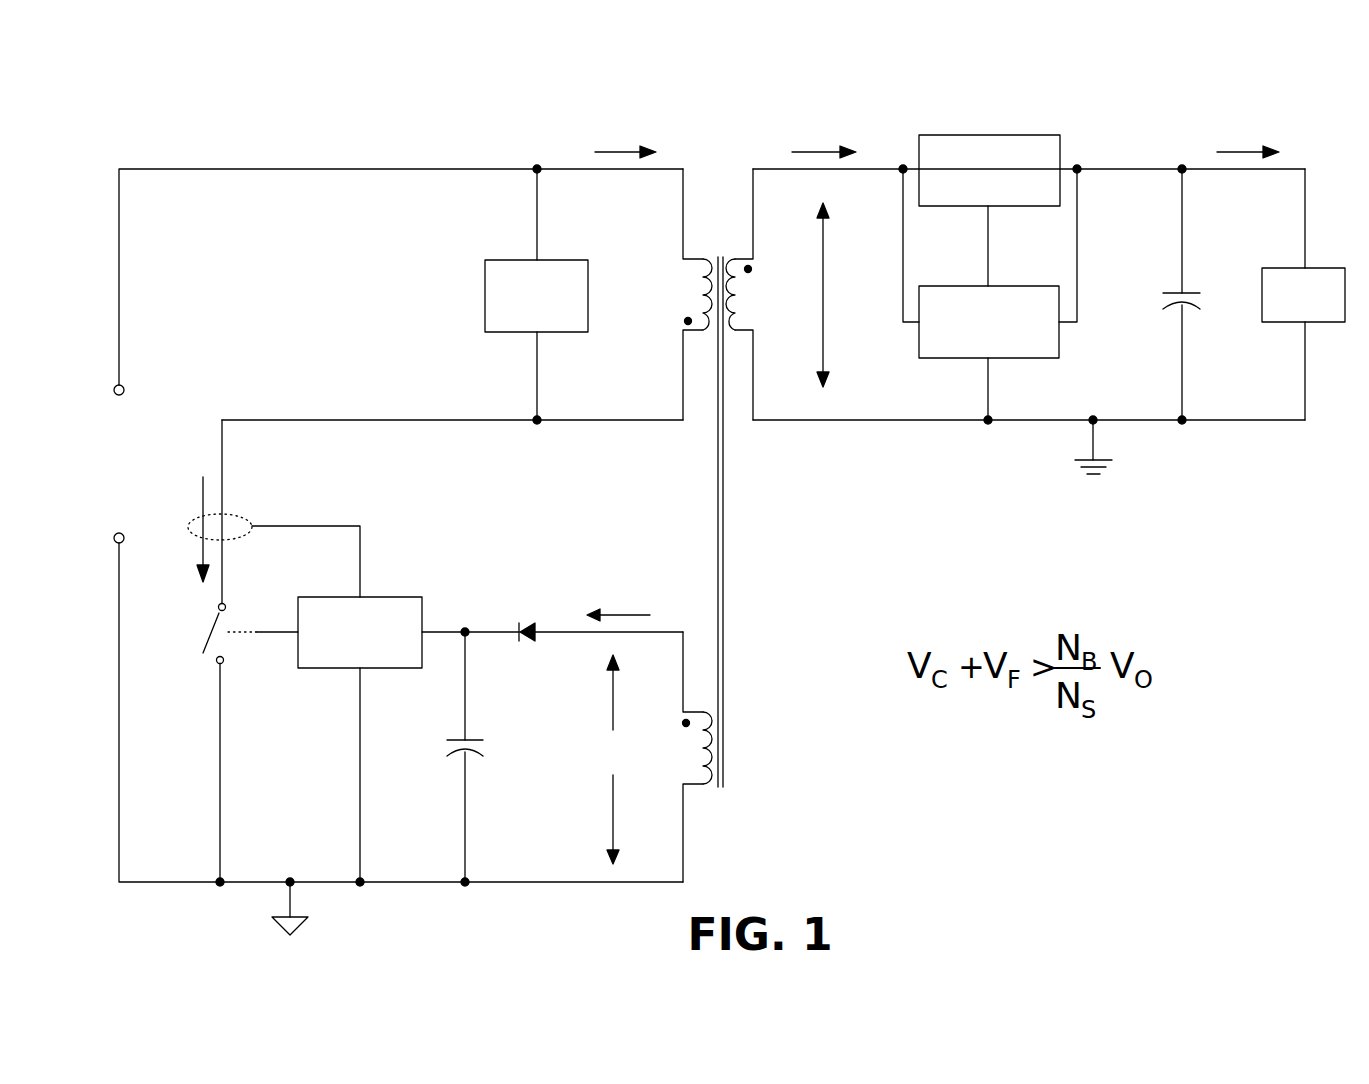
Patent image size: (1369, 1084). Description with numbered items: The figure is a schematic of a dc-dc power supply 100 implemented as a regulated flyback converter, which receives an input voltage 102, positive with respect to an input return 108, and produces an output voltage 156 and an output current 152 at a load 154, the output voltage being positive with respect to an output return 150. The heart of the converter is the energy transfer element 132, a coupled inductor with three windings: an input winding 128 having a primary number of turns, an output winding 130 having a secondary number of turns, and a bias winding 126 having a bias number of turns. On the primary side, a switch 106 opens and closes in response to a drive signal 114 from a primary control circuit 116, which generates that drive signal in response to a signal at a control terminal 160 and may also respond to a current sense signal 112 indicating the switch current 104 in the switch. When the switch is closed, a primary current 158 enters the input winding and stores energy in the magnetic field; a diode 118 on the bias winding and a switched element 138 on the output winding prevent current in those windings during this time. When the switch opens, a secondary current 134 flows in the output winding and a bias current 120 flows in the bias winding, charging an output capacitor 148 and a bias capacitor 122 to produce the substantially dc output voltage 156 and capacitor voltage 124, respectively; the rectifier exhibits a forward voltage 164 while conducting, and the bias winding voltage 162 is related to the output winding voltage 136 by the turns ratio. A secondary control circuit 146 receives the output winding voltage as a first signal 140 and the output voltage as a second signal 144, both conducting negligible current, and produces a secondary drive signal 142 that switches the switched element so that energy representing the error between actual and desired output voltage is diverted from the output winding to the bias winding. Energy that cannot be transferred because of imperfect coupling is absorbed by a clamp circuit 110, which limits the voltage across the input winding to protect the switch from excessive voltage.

The dc-dc power supply 100 is at (727, 64).
The input voltage VIN 102 is at (103, 462).
The current ID 104 is at (196, 480).
The switch S1 106 is at (197, 625).
The input return 108 is at (313, 908).
The clamp circuit 110 is at (480, 302).
The current sense signal 112 is at (327, 532).
The drive signal 114 is at (292, 640).
The primary control circuit 116 is at (392, 592).
The diode 118 is at (526, 620).
The current IB 120 is at (632, 612).
The capacitor C2 122 is at (456, 760).
The voltage VC 124 is at (505, 740).
The bias winding 126 is at (688, 770).
The input winding 128 is at (688, 275).
The output winding 130 is at (752, 318).
The energy transfer element L1 132 is at (728, 497).
The current IS 134 is at (805, 141).
The voltage VS 136 is at (832, 300).
The switched element 138 is at (995, 127).
The signal 140 is at (910, 268).
The drive signal 142 is at (997, 268).
The signal 144 is at (1085, 268).
The secondary control circuit 146 is at (960, 364).
The capacitor C1 148 is at (1165, 318).
The output return 150 is at (1105, 438).
The output current IO 152 is at (1228, 141).
The load 154 is at (1318, 258).
The output voltage VO 156 is at (1230, 313).
The primary current IP 158 is at (608, 141).
The control terminal 160 is at (435, 626).
The voltage VB 162 is at (607, 755).
The forward voltage VF 164 is at (523, 666).